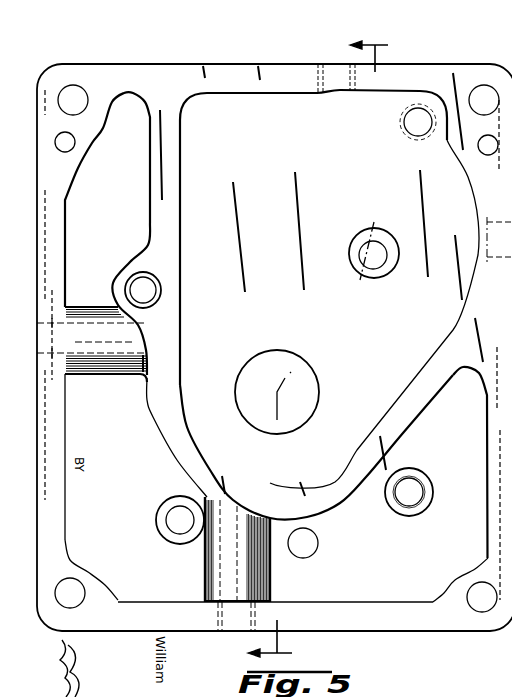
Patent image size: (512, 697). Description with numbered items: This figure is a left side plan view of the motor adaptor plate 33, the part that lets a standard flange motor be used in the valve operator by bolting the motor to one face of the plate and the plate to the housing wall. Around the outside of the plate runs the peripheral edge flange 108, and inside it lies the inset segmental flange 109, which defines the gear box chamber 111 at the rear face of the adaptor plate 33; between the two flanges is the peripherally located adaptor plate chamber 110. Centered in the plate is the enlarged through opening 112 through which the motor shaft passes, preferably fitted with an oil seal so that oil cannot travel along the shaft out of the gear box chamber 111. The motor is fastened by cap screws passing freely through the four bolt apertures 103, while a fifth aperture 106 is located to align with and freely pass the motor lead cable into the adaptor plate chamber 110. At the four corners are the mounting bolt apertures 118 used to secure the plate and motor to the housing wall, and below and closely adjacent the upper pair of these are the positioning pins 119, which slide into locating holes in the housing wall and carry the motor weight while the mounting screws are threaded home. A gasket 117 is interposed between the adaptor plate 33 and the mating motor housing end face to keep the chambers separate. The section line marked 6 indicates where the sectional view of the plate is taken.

The adaptor plate 33 is at (511, 632).
The bolt apertures 103 is at (142, 281).
The fifth aperture 106 is at (313, 552).
The peripheral edge flange 108 is at (281, 75).
The inset segmental flange 109 is at (184, 380).
The adaptor plate chamber 110 is at (409, 553).
The gear box chamber 111 is at (349, 204).
The through opening 112 is at (270, 357).
The gasket 117 is at (389, 603).
The mounting bolt apertures 118 is at (73, 85).
The positioning pins 119 is at (75, 141).
The section line 6- 6 is at (330, 350).